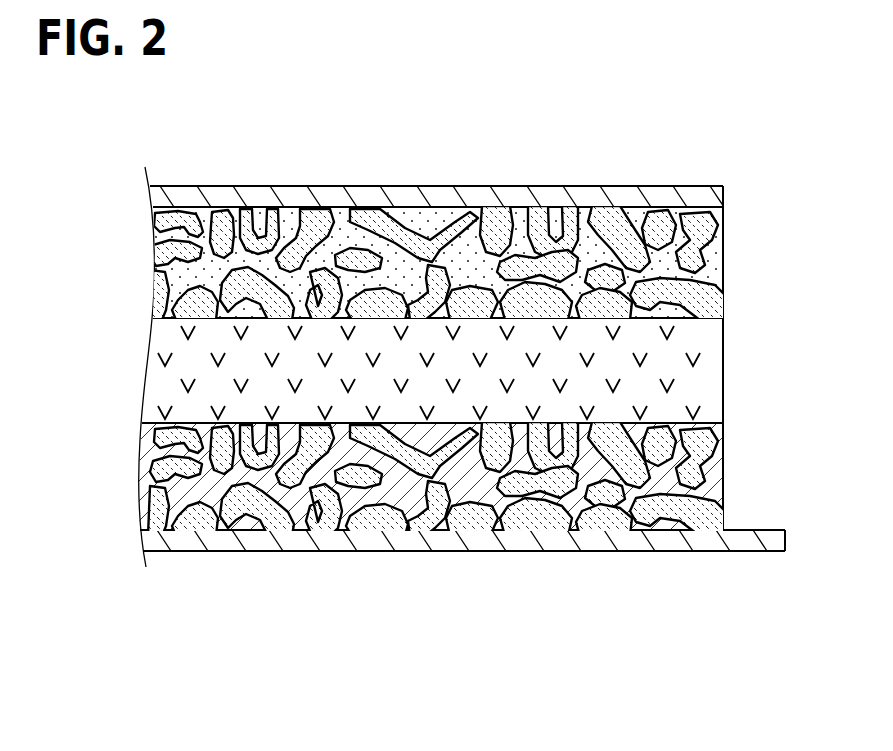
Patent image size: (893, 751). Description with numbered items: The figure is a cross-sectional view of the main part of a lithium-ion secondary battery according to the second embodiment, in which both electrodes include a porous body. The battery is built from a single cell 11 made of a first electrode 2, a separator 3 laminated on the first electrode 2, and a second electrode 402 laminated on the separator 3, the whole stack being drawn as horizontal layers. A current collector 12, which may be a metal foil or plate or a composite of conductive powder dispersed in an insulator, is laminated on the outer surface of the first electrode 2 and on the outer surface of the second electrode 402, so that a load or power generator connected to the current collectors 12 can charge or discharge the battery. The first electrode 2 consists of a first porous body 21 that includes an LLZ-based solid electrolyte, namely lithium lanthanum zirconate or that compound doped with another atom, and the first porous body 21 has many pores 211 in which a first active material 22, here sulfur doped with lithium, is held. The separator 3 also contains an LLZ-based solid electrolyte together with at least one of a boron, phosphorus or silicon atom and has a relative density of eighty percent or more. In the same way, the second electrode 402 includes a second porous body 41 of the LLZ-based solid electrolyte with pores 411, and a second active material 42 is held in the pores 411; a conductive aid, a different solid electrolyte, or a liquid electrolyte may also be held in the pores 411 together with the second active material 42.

The single cell 11 is at (689, 173).
The current collector 12 is at (226, 200).
The first electrode 2 is at (479, 192).
The first porous body 21 is at (436, 201).
The pores 211 is at (582, 237).
The first active material 22 is at (348, 236).
The separator 3 is at (723, 377).
The second electrode 402 is at (492, 549).
The second porous body 41 is at (451, 549).
The pores 411 is at (412, 450).
The second active material 42 is at (586, 505).